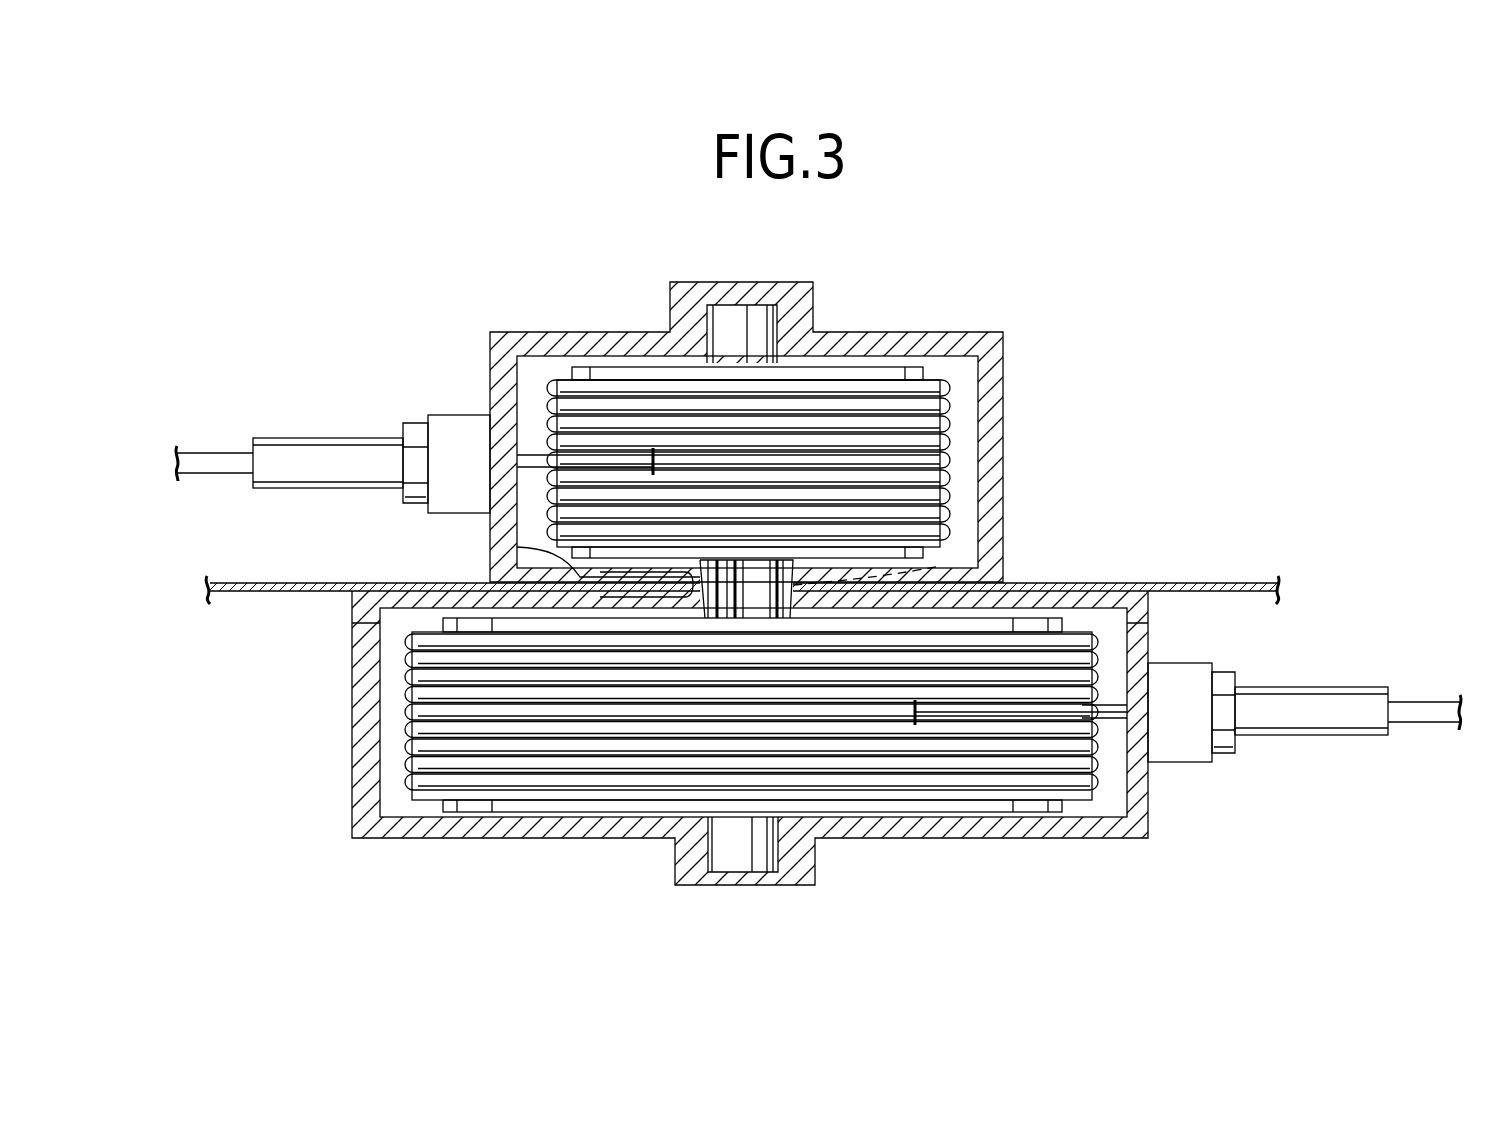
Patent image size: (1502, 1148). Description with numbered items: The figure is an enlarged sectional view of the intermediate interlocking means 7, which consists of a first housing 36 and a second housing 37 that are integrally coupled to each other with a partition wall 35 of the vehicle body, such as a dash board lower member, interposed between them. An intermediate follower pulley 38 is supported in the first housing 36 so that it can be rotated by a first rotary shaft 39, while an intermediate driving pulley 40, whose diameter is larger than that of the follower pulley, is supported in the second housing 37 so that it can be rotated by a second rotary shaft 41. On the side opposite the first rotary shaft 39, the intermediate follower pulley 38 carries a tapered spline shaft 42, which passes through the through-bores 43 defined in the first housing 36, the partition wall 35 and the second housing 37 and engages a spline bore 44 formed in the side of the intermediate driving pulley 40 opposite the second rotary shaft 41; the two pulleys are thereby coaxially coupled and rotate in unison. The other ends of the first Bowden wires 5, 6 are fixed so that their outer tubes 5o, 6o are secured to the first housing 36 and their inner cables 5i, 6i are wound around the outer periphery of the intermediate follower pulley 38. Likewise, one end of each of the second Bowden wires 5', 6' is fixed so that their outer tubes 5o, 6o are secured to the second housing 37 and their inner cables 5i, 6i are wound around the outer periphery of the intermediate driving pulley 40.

The intermediate interlocking means 7 is at (960, 306).
The partition wall 35 is at (1112, 580).
The first housing 36 is at (988, 430).
The second housing 37 is at (363, 720).
The intermediate follower pulley 38 is at (610, 372).
The first rotary shaft 39 is at (738, 318).
The intermediate driving pulley 40 is at (620, 800).
The second rotary shaft 41 is at (775, 840).
The tapered spline shaft 42 is at (757, 575).
The through-bores 43 is at (517, 547).
The spline bore 44 is at (940, 566).
The first Bowden wire 6 is at (351, 409).
The first Bowden wire 5 is at (351, 409).
The outer tube 6o is at (299, 424).
The outer tube 5o is at (210, 462).
The inner cable 6i is at (351, 420).
The inner cable 5i is at (527, 457).
The second Bowden wire 6' is at (1287, 665).
The second Bowden wire 5' is at (1287, 665).